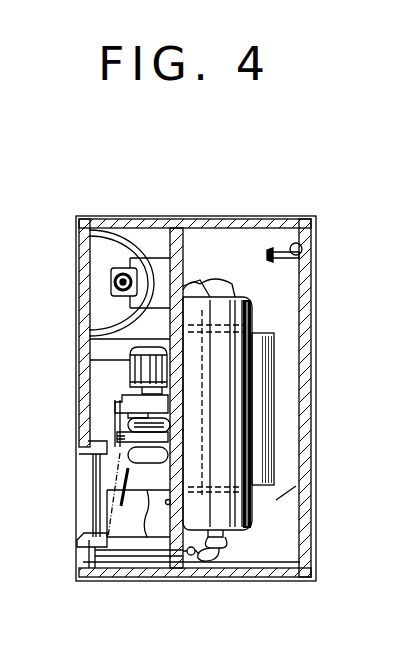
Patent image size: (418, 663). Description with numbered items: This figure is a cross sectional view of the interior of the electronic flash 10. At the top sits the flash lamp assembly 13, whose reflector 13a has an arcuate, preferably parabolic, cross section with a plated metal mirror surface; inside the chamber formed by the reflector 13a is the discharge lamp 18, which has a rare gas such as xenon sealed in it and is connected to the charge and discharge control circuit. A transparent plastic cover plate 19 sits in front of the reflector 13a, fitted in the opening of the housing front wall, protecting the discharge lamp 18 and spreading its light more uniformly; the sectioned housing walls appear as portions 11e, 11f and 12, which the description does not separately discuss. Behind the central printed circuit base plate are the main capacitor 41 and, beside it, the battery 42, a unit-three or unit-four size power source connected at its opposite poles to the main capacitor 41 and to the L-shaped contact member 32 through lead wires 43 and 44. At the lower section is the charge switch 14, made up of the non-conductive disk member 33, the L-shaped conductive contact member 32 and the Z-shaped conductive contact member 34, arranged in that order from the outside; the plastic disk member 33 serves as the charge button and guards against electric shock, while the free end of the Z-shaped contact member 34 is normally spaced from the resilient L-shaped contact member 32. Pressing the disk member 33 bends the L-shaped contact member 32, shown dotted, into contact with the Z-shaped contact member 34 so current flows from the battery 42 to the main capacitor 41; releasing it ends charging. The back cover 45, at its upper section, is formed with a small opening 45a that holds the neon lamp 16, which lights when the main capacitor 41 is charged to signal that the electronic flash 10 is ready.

The electronic flash 10 is at (241, 208).
The partition wall 11e is at (197, 216).
The bottom wall 11f is at (199, 572).
The case side wall 12 is at (317, 368).
The flash lamp assembly 13 is at (66, 237).
The reflector 13a is at (122, 256).
The charge switch 14 is at (80, 482).
The neon lamp 16 is at (292, 264).
The discharge lamp 18 is at (116, 287).
The transparent plastic cover plate 19 is at (78, 257).
The L-shaped conductive contact member 32 is at (158, 572).
The non-conductive disk member 33 is at (92, 512).
The Z-shaped conductive contact member 34 is at (139, 521).
The main capacitor 41 is at (274, 428).
The battery 42 is at (253, 321).
The lead wire 43 is at (216, 286).
The lead wire 44 is at (230, 556).
The back cover 45 is at (293, 491).
The small opening 45a is at (304, 248).